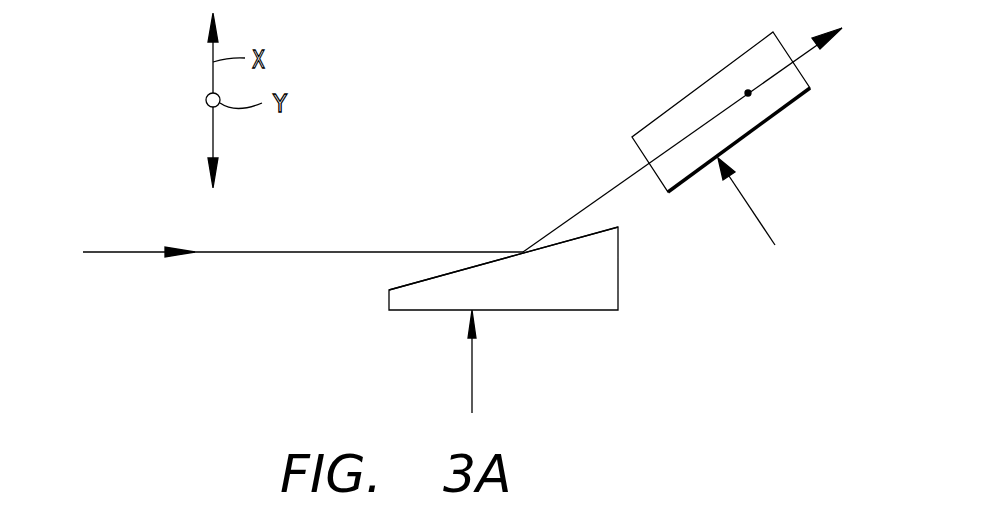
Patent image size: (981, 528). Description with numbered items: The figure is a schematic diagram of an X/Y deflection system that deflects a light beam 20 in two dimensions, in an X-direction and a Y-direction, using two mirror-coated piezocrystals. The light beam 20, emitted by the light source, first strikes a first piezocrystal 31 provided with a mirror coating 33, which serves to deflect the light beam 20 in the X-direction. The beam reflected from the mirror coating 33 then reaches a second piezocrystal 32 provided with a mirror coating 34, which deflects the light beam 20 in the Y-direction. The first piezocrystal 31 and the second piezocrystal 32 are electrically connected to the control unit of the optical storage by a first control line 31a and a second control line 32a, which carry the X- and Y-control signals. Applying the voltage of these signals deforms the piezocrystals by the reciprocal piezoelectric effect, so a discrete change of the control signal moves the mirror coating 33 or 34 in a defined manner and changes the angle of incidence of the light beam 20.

The light beam 20 is at (282, 251).
The first piezocrystal 31 is at (573, 336).
The first control line 31a is at (470, 388).
The second piezocrystal 32 is at (767, 140).
The second control line 32a is at (758, 223).
The mirror coating 33 is at (435, 277).
The mirror coating 34 is at (806, 86).